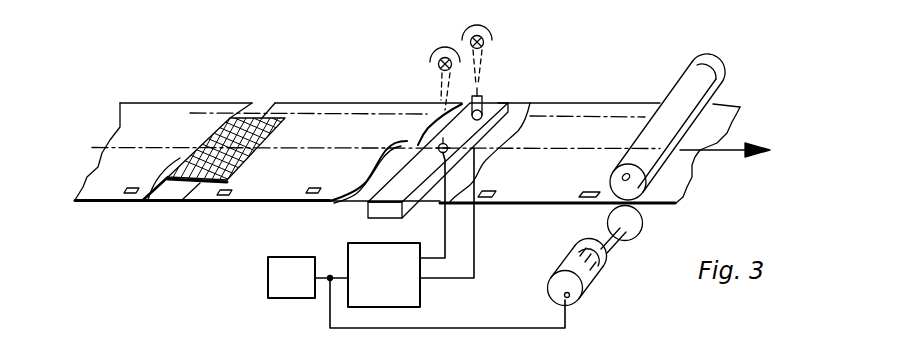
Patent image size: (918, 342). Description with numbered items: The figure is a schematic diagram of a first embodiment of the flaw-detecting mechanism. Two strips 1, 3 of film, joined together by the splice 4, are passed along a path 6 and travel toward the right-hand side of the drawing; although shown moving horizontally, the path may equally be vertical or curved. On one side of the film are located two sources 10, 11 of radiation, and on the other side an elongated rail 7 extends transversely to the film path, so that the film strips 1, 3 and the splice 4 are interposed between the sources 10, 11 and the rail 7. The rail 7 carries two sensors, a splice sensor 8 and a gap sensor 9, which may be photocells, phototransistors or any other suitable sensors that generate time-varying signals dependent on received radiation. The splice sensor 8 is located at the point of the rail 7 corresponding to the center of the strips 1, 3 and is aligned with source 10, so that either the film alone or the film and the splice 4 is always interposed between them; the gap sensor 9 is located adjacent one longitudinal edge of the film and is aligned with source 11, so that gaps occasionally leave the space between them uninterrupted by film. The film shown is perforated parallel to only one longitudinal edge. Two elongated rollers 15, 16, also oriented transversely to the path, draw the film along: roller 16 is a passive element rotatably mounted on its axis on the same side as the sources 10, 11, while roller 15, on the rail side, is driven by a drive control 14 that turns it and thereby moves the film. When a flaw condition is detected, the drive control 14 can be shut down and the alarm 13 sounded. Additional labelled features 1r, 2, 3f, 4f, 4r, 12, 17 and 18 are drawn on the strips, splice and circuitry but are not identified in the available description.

The strip of film 1 is at (342, 104).
The rear edge of first web 1r is at (193, 200).
The splice joint 2 is at (180, 192).
The strip of film 3 is at (177, 103).
The front edge of second web 3f is at (143, 200).
The splice 4 is at (257, 116).
The front edge of tape 4f is at (252, 170).
The rear edge of tape 4r is at (140, 199).
The path 6 is at (722, 152).
The rail 7 is at (367, 209).
The splice sensor 8 is at (435, 150).
The gap sensor 9 is at (484, 98).
The source of radiation 10 is at (437, 64).
The source of radiation 11 is at (491, 30).
The control unit 12 is at (421, 293).
The alarm 13 is at (268, 277).
The drive control 14 is at (578, 298).
The roller 15 is at (639, 228).
The roller 16 is at (610, 196).
The center reference line 17 is at (152, 148).
The upper reference line 18 is at (203, 114).